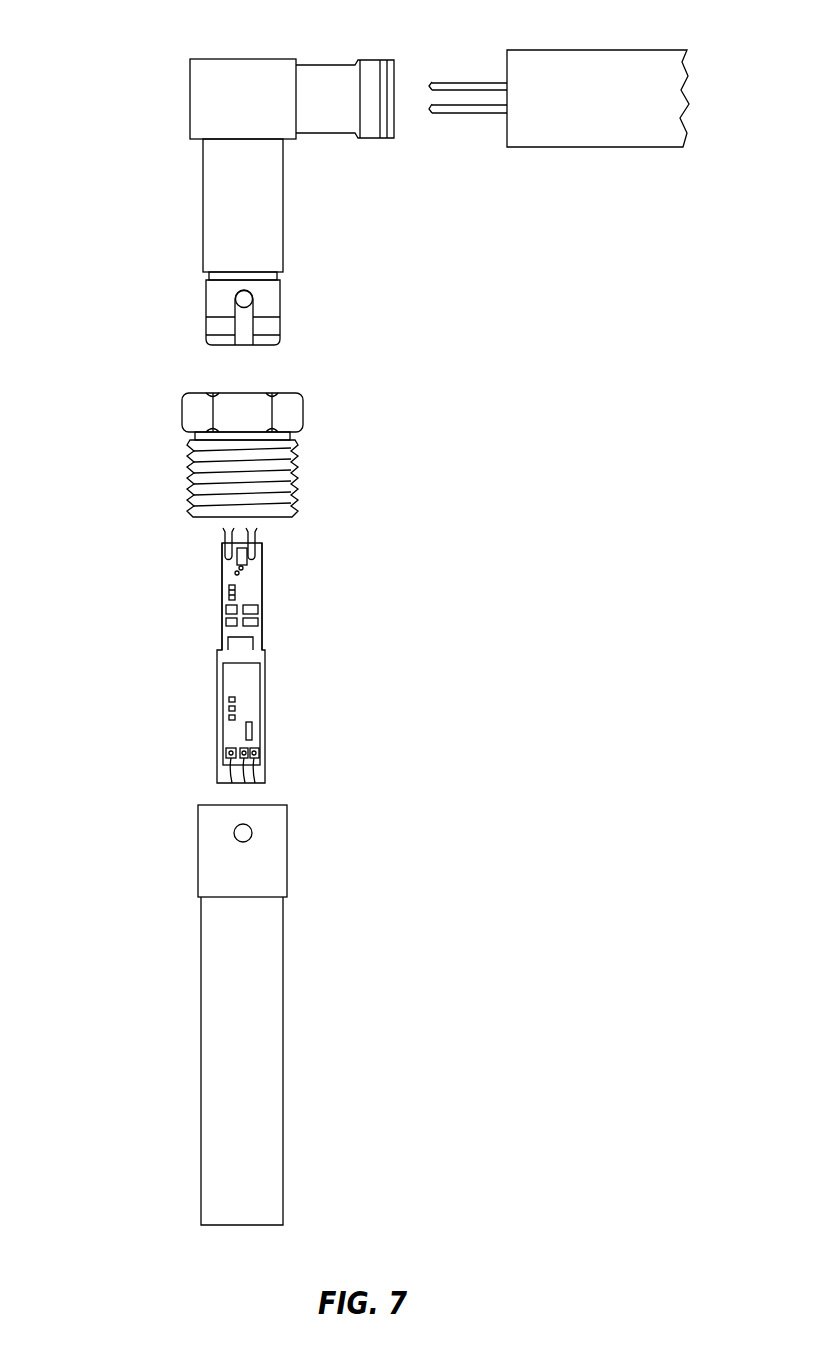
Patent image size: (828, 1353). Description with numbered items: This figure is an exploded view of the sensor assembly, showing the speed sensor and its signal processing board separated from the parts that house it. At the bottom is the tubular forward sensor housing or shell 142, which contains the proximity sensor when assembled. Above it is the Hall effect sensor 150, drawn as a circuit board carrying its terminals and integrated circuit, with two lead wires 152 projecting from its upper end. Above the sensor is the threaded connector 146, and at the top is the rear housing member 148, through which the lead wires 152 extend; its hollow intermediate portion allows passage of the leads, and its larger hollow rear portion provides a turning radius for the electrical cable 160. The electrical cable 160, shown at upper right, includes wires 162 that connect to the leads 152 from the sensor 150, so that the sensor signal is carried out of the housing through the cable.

The forward sensor housing 142 is at (135, 895).
The threaded connector 146 is at (148, 447).
The rear housing member 148 is at (140, 189).
The Hall effect sensor 150 is at (165, 673).
The lead wires 152 is at (226, 540).
The electrical cable 160 is at (595, 50).
The wires 162 is at (468, 83).